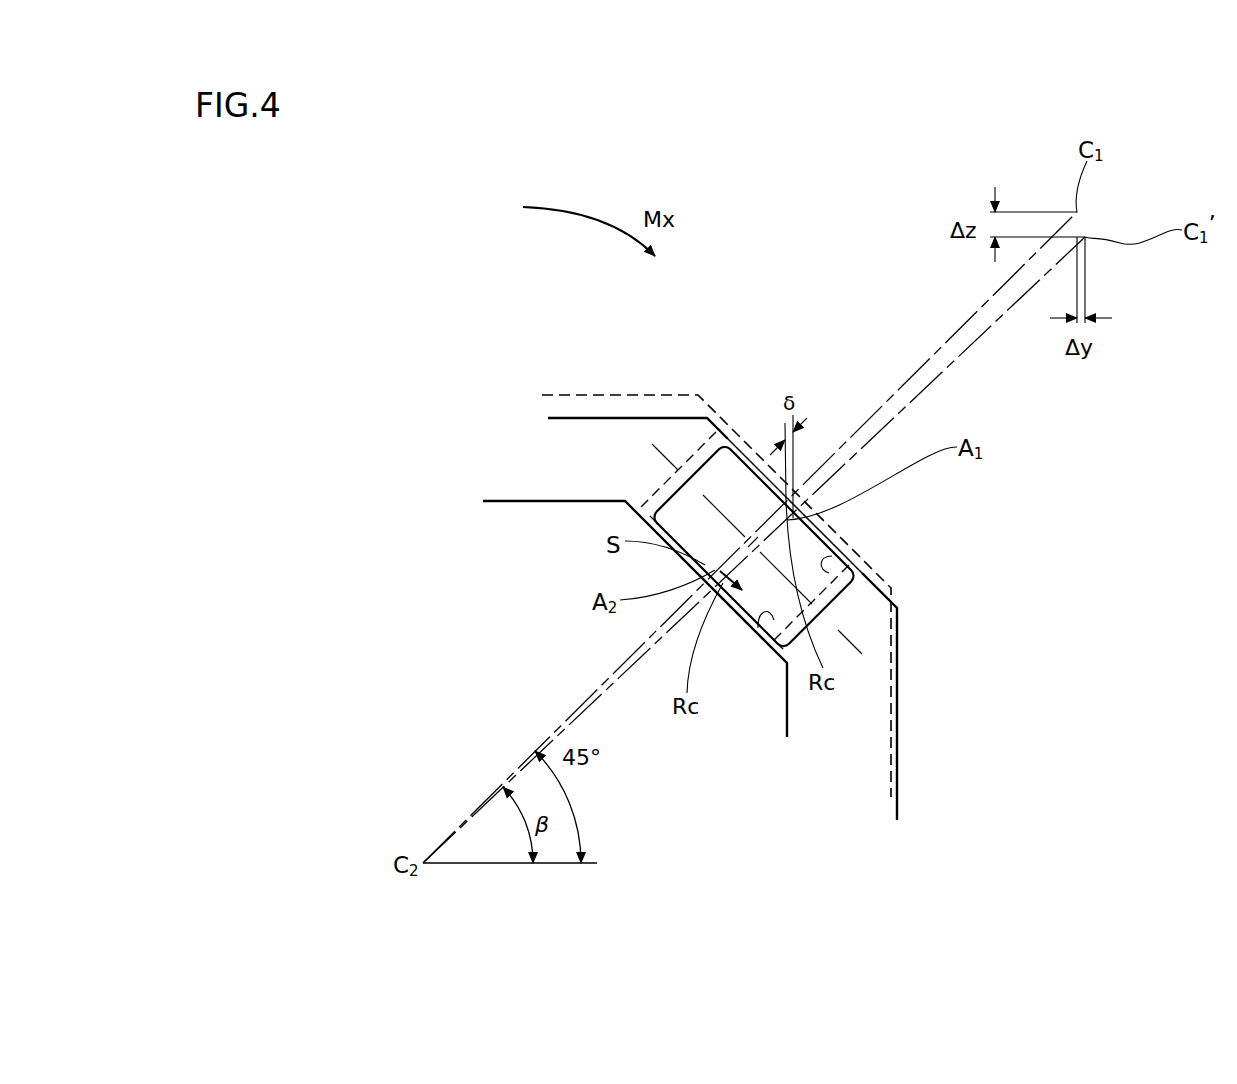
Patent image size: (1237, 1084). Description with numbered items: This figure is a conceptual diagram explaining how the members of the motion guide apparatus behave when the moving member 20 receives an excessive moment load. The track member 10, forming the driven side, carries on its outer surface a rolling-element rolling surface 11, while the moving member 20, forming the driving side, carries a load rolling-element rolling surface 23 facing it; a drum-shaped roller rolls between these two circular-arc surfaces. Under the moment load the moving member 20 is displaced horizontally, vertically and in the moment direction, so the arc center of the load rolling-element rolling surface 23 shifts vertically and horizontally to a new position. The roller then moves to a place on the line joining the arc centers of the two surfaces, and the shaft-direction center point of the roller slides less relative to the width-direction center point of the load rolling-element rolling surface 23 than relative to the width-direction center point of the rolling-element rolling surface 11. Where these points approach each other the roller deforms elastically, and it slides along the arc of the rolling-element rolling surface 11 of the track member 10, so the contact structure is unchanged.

The track member 10 is at (657, 798).
The rolling-element rolling surface 11 is at (768, 642).
The moving member 20 is at (1047, 594).
The load rolling-element rolling surface 23 is at (852, 557).